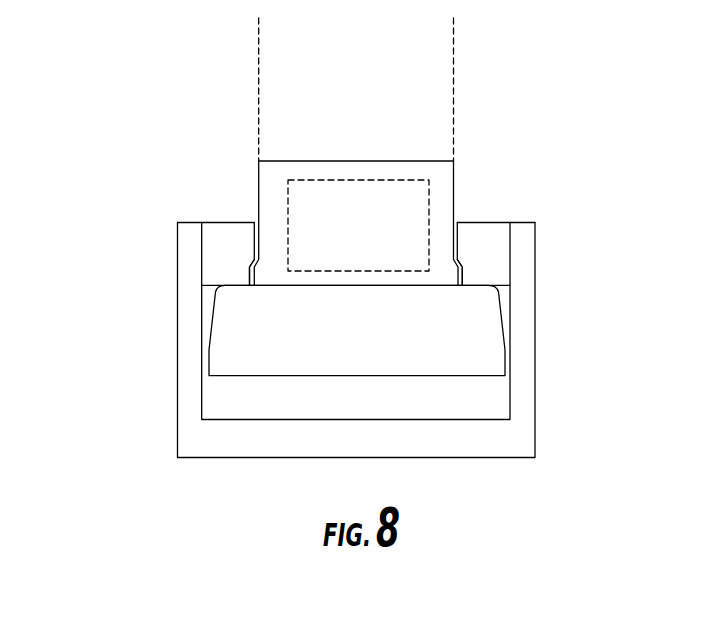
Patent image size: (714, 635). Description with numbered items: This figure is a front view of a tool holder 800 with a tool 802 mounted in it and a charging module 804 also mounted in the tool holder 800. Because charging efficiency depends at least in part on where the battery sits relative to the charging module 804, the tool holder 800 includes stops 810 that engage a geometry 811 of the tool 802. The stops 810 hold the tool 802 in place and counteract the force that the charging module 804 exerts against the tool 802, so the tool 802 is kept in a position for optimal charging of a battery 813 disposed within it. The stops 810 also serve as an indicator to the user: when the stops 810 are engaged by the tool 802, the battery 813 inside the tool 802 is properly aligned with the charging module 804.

The tool holder 800 is at (197, 484).
The tool 802 is at (168, 128).
The charging module 804 is at (222, 352).
The stops 810 is at (215, 236).
The geometry 811 is at (247, 266).
The battery 813 is at (430, 198).